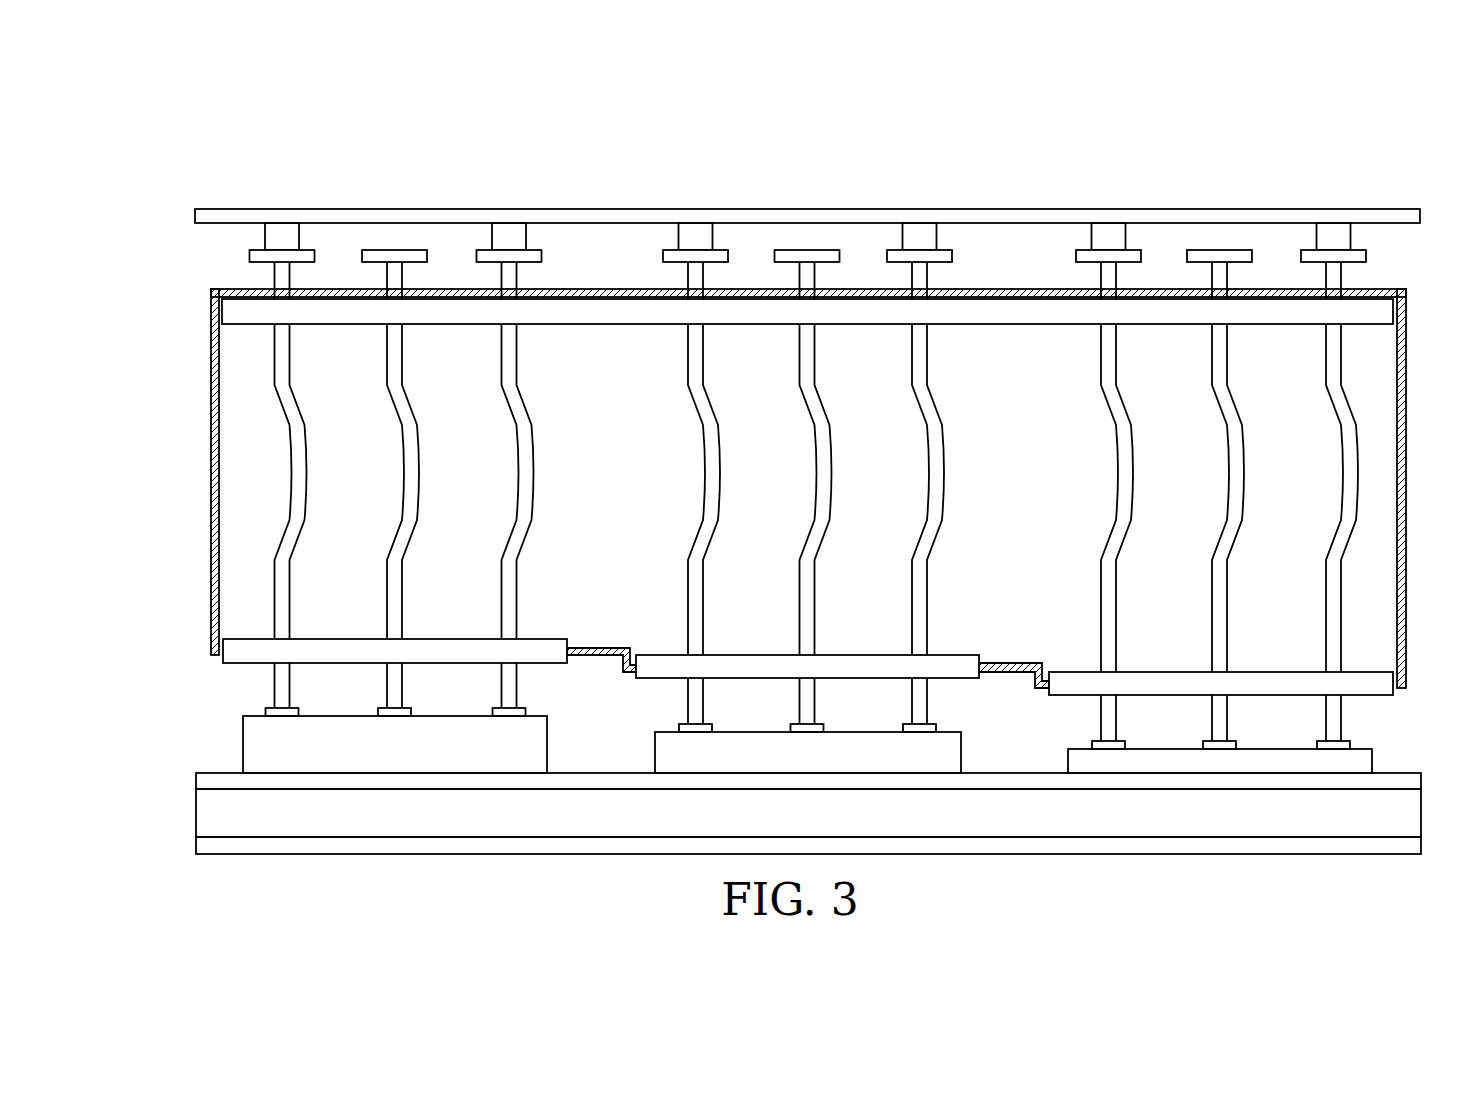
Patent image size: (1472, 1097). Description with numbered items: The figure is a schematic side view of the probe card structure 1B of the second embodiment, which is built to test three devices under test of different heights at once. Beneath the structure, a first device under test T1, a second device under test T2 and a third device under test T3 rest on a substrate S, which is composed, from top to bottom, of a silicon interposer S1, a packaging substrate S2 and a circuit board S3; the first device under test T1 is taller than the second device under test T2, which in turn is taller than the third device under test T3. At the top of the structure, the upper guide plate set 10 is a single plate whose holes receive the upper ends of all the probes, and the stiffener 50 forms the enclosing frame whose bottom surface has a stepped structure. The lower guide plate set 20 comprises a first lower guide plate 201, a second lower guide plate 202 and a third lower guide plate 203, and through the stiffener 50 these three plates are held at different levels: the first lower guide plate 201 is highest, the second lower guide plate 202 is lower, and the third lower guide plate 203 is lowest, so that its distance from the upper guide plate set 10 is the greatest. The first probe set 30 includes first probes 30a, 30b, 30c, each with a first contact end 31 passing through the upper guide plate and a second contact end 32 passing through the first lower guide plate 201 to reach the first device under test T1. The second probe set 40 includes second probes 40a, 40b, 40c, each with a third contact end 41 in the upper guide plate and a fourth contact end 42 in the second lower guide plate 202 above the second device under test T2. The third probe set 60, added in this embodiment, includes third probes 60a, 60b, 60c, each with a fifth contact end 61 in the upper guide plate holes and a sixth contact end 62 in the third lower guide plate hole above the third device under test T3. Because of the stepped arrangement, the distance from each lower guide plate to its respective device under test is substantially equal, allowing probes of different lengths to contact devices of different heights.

The probe card structure 1B is at (1372, 188).
The upper guide plate set 10 is at (1390, 312).
The lower guide plate set 20 is at (326, 92).
The first lower guide plate 201 is at (452, 648).
The second lower guide plate 202 is at (865, 666).
The third lower guide plate 203 is at (1277, 681).
The first probe set 30 is at (140, 417).
The first probe 30a is at (292, 441).
The first probe 30b is at (411, 475).
The first probe 30c is at (523, 500).
The first contact end 31 is at (278, 277).
The second contact end 32 is at (276, 681).
The second probe set 40 is at (618, 417).
The second probe 40a is at (708, 441).
The second probe 40b is at (823, 475).
The second probe 40c is at (933, 502).
The third contact end 41 is at (690, 277).
The fourth contact end 42 is at (689, 698).
The stiffener 50 is at (1408, 478).
The third probe set 60 is at (1030, 417).
The third probe 60a is at (1119, 441).
The third probe 60b is at (1234, 475).
The third probe 60c is at (1345, 502).
The fifth contact end 61 is at (1102, 275).
The sixth contact end 62 is at (1101, 714).
The first device under test T1 is at (251, 737).
The second device under test T2 is at (661, 755).
The third device under test T3 is at (1375, 763).
The substrate S is at (131, 757).
The silicon interposer S1 is at (201, 781).
The packaging substrate S2 is at (201, 813).
The circuit board S3 is at (201, 845).